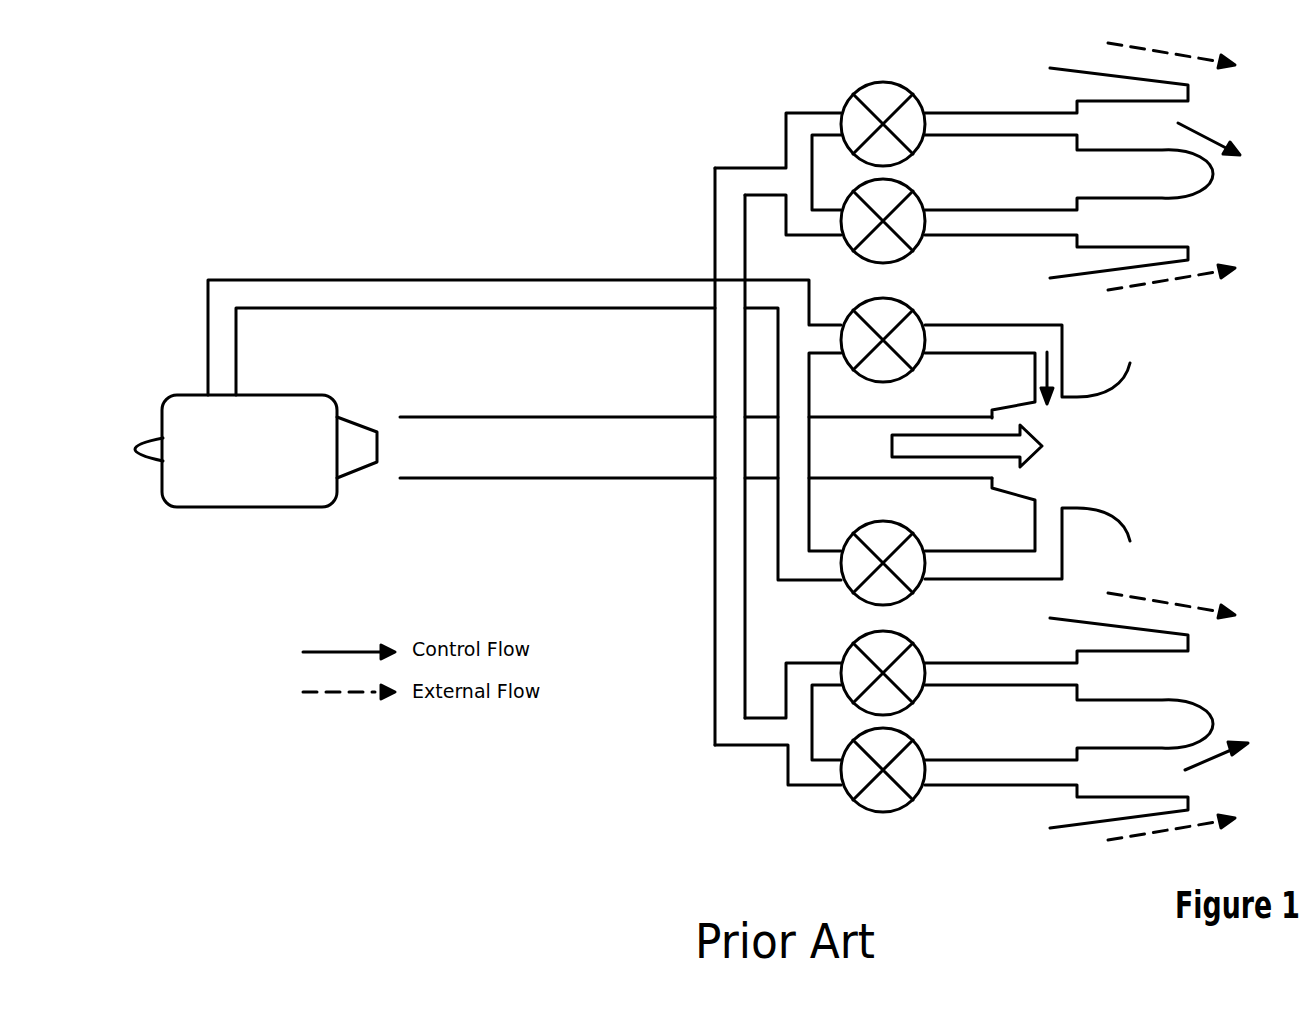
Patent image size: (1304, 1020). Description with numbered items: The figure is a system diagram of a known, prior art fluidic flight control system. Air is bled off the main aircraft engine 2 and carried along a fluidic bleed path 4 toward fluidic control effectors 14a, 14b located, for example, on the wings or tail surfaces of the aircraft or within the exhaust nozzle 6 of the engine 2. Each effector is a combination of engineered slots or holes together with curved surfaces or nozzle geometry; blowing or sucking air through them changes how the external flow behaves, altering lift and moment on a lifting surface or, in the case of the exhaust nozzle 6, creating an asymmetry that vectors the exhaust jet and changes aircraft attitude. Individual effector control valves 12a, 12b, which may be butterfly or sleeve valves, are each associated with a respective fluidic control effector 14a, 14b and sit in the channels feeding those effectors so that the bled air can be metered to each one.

The main aircraft engine 2 is at (268, 395).
The fluidic bleed path 4 is at (493, 280).
The exhaust nozzle 6 is at (1113, 383).
The effector control valve 12a is at (917, 97).
The effector control valve 12b is at (875, 812).
The fluidic control effector 14a is at (1213, 180).
The fluidic control effector 14b is at (1213, 720).